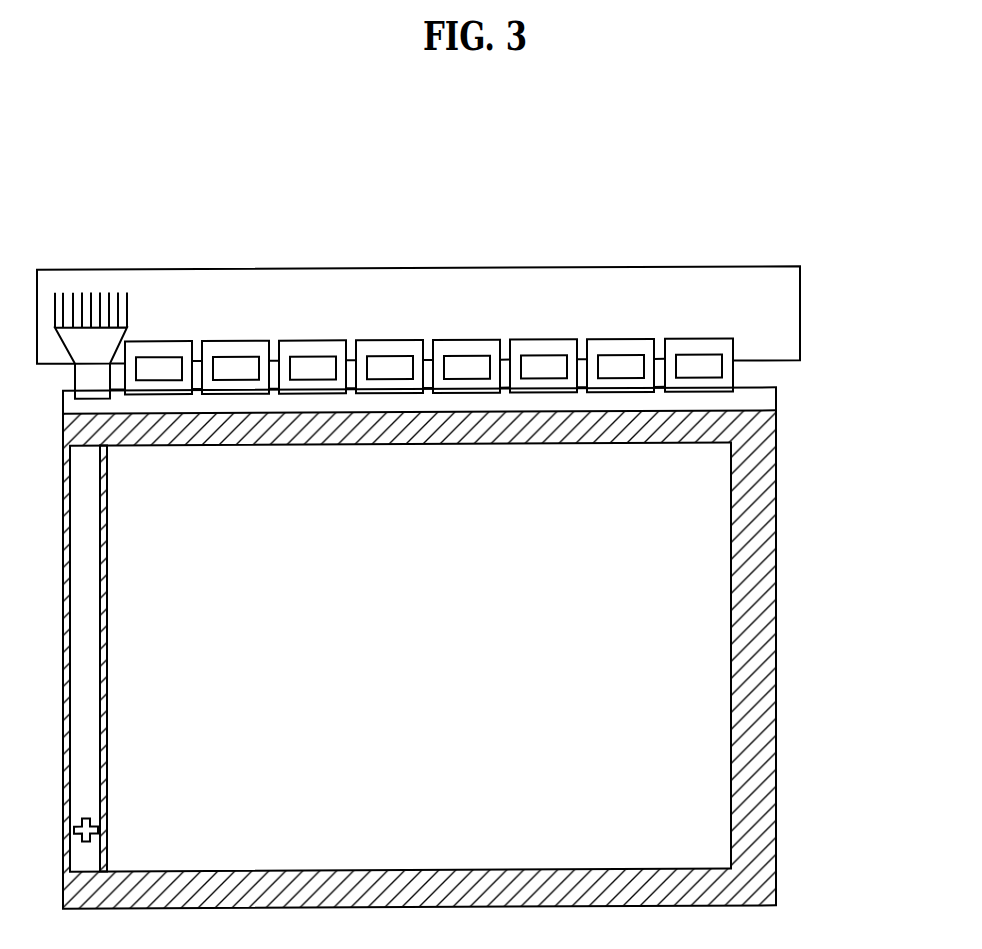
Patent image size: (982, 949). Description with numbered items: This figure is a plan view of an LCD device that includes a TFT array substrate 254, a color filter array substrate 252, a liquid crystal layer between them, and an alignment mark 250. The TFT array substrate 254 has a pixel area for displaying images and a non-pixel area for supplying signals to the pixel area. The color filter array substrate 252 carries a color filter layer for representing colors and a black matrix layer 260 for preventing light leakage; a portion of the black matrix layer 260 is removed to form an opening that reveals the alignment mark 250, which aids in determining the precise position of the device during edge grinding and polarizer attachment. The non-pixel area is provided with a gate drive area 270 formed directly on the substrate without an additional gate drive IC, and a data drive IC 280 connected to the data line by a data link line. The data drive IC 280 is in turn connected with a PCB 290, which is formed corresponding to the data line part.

The alignment mark 250 is at (86, 843).
The color filter array substrate 252 is at (780, 582).
The TFT array substrate 254 is at (763, 403).
The black matrix layer 260 is at (760, 649).
The gate drive area 270 is at (90, 643).
The data drive IC 280 is at (727, 375).
The PCB 290 is at (787, 316).